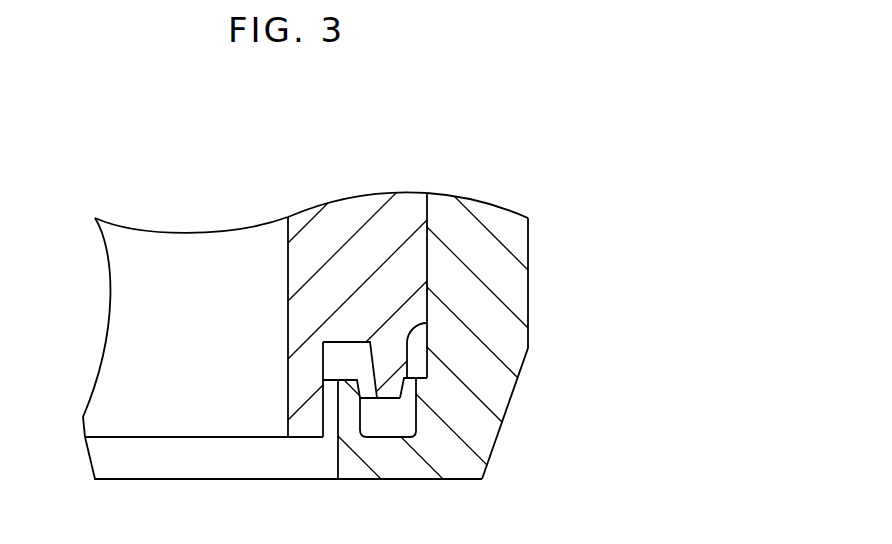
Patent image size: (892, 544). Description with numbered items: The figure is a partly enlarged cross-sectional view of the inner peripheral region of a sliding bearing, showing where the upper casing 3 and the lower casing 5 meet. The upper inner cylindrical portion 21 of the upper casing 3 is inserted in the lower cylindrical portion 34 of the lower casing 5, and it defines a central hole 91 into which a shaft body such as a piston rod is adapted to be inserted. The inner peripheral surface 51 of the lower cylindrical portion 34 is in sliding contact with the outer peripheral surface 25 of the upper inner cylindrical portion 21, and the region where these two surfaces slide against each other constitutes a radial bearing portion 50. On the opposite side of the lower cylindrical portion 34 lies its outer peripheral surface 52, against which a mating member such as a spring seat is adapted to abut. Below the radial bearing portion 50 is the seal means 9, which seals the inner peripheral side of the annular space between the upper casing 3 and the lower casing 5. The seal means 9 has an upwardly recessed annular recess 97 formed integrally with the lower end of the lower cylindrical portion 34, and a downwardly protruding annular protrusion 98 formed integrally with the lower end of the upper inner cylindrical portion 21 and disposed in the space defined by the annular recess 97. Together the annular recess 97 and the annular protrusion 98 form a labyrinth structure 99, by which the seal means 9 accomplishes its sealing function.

The upper casing 3 is at (302, 220).
The lower casing 5 is at (470, 470).
The seal means 9 is at (343, 357).
The upper inner cylindrical portion 21 is at (300, 265).
The outer peripheral surface 25 is at (427, 213).
The lower cylindrical portion 34 is at (515, 277).
The radial bearing portion 50 is at (430, 256).
The inner peripheral surface 51 is at (423, 212).
The outer peripheral surface 52 is at (530, 318).
The central hole 91 is at (142, 325).
The annular recess 97 is at (392, 435).
The annular protrusion 98 is at (393, 387).
The labyrinth structure 99 is at (368, 422).